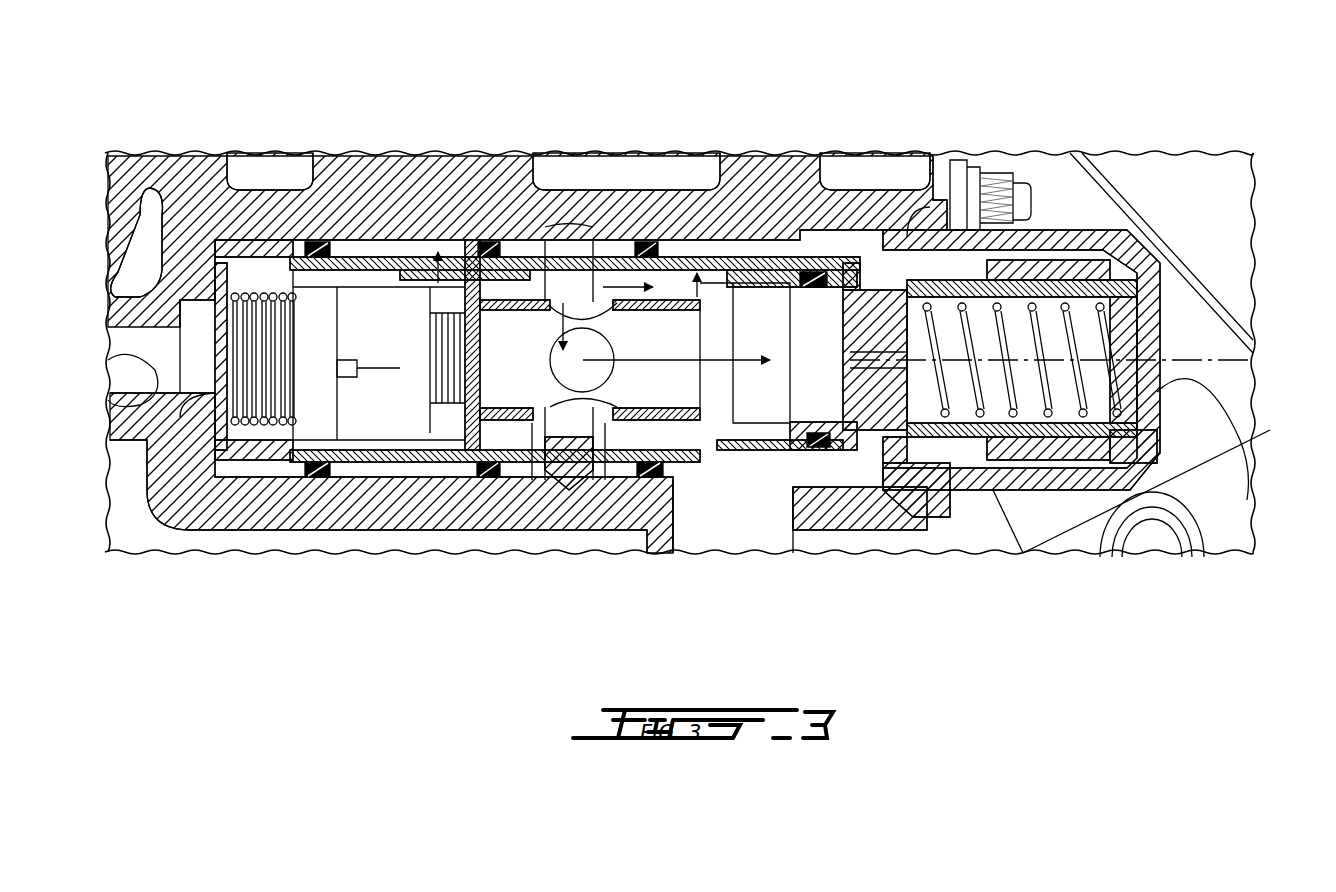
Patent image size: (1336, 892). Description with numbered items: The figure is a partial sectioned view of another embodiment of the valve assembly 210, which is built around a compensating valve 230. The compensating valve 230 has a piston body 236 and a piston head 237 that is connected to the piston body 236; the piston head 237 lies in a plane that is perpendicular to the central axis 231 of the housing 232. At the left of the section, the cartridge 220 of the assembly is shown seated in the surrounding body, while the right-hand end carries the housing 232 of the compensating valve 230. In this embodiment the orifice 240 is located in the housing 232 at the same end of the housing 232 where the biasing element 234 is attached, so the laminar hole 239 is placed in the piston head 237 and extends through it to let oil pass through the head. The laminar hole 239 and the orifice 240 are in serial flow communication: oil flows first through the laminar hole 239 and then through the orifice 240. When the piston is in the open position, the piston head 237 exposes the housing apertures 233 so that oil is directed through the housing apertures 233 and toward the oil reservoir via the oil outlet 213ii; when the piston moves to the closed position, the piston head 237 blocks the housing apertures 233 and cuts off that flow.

The valve assembly 210 is at (678, 122).
The cartridge 220 is at (373, 480).
The oil outlet 213ii is at (744, 528).
The compensating valve 230 is at (1146, 399).
The central axis 231 is at (1215, 360).
The housing 232 is at (967, 437).
The housing apertures 233 is at (899, 455).
The biasing element 234 is at (1143, 437).
The piston body 236 is at (1057, 455).
The piston head 237 is at (881, 278).
The laminar hole 239 is at (886, 348).
The orifice 240 is at (1112, 348).